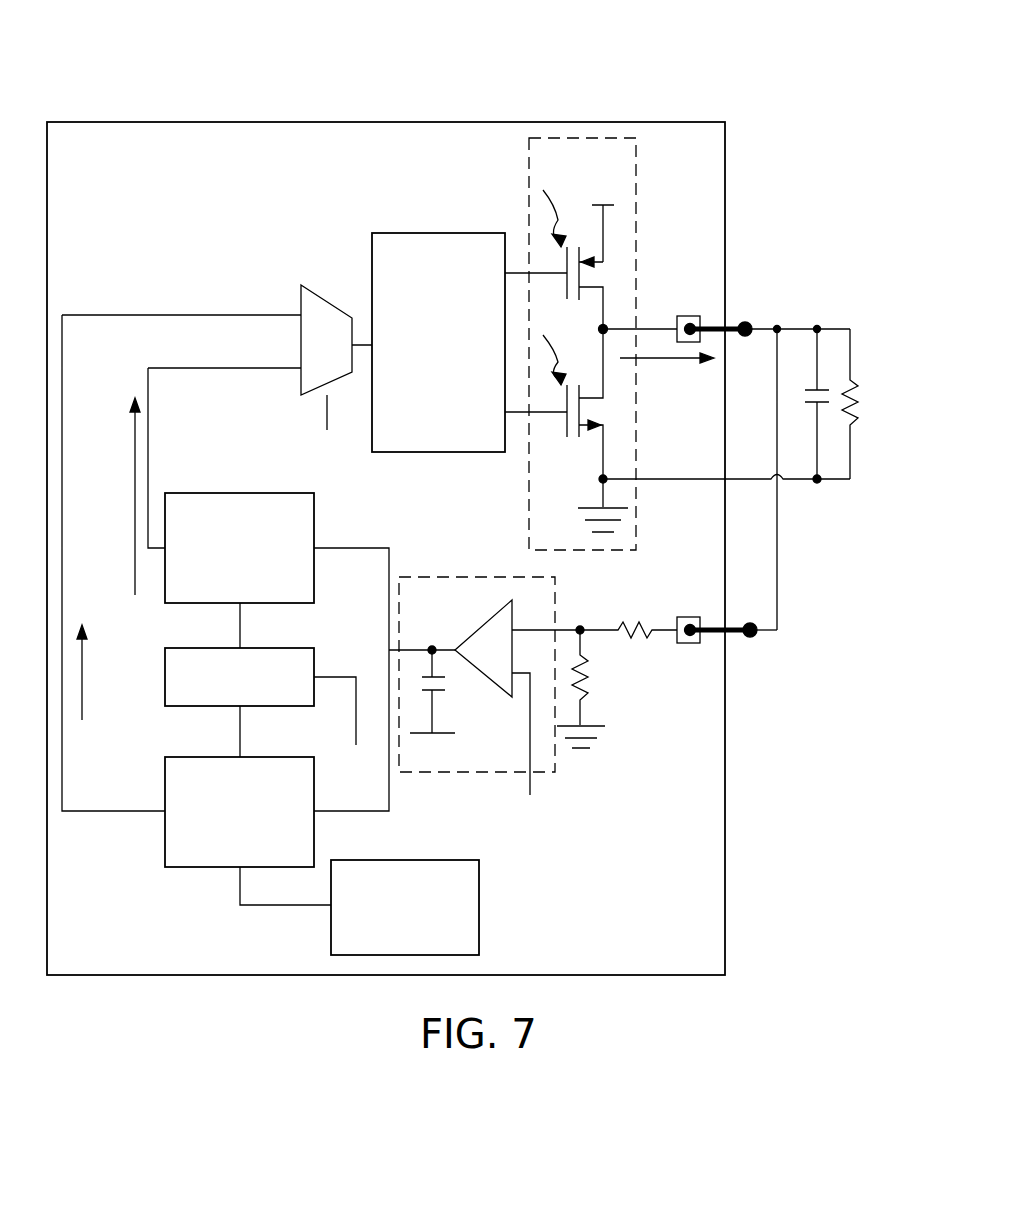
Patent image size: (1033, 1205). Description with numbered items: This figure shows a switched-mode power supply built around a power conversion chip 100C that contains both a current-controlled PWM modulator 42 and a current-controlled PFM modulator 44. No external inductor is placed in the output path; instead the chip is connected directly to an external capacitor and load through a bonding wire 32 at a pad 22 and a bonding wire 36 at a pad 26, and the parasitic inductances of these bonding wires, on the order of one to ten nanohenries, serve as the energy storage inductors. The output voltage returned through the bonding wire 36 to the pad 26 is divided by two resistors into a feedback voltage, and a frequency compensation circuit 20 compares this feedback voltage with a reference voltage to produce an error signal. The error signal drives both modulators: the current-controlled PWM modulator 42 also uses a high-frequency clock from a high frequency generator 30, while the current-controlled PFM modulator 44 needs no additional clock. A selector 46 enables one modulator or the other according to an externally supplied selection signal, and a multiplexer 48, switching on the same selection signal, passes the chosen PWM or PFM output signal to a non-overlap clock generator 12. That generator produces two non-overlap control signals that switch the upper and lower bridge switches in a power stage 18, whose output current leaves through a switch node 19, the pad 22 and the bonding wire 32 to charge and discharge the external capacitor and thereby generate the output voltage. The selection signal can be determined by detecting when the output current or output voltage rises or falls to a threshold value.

The power conversion chip 100C is at (727, 176).
The power stage 18 is at (573, 138).
The non-overlap clock generator 12 is at (445, 233).
The multiplexer 48 is at (300, 288).
The current-controlled PFM modulator 44 is at (206, 493).
The selector 46 is at (298, 648).
The current-controlled PWM modulator 42 is at (202, 867).
The high frequency generator 30 is at (480, 900).
The frequency compensation circuit 20 is at (430, 577).
The switch node 19 is at (607, 327).
The pad 22 is at (690, 316).
The bonding wire 32 is at (730, 325).
The pad 26 is at (690, 617).
The bonding wire 36 is at (730, 617).